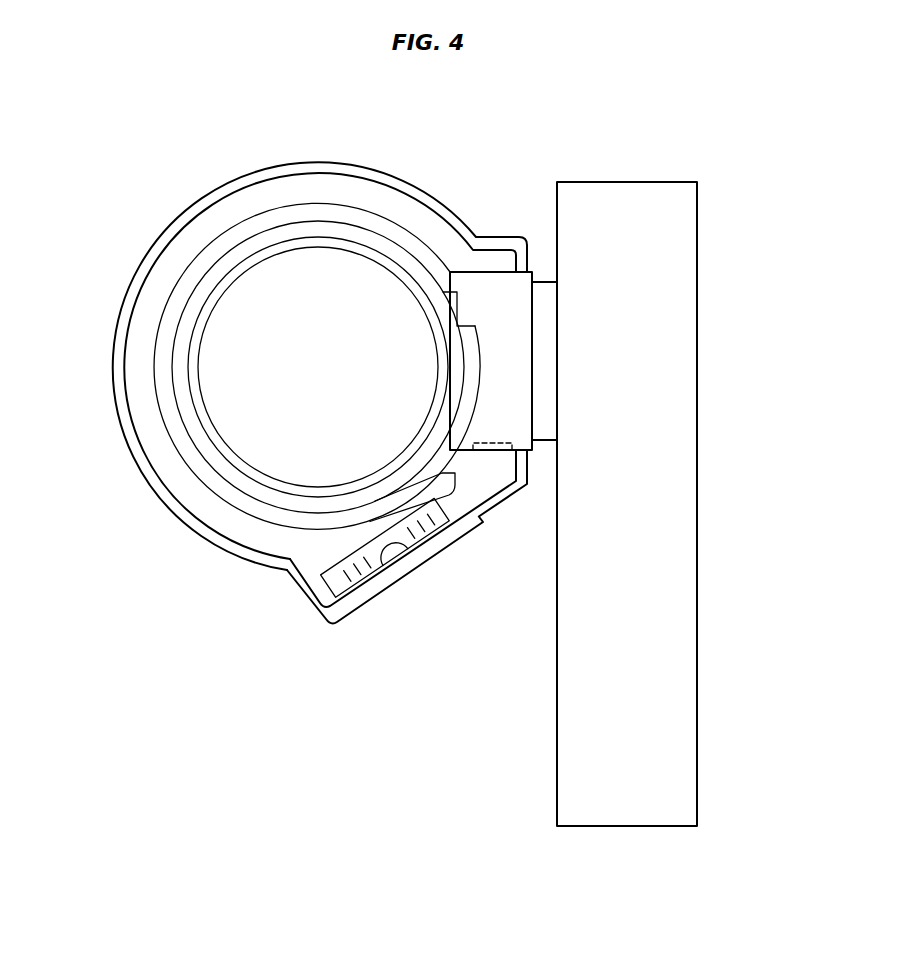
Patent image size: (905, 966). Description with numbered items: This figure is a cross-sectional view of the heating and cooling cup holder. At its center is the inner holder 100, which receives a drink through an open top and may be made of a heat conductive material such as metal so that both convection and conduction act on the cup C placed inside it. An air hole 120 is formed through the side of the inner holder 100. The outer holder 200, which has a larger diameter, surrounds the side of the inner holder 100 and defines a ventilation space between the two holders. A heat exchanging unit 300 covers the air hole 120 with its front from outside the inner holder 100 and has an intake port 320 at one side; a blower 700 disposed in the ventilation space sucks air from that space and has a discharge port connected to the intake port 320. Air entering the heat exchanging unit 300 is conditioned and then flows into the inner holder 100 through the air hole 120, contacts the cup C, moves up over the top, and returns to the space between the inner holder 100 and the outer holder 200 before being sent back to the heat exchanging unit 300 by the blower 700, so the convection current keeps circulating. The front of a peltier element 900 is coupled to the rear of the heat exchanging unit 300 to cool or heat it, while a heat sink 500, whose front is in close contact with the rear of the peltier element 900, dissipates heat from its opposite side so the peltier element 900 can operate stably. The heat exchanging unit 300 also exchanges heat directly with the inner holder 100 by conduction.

The cup C is at (263, 248).
The inner holder 100 is at (228, 490).
The air hole 120 is at (450, 310).
The outer holder 200 is at (148, 478).
The heat exchanging unit 300 is at (492, 292).
The intake port 320 is at (492, 448).
The heat sink 500 is at (668, 515).
The blower 700 is at (368, 568).
The peltier element 900 is at (545, 341).